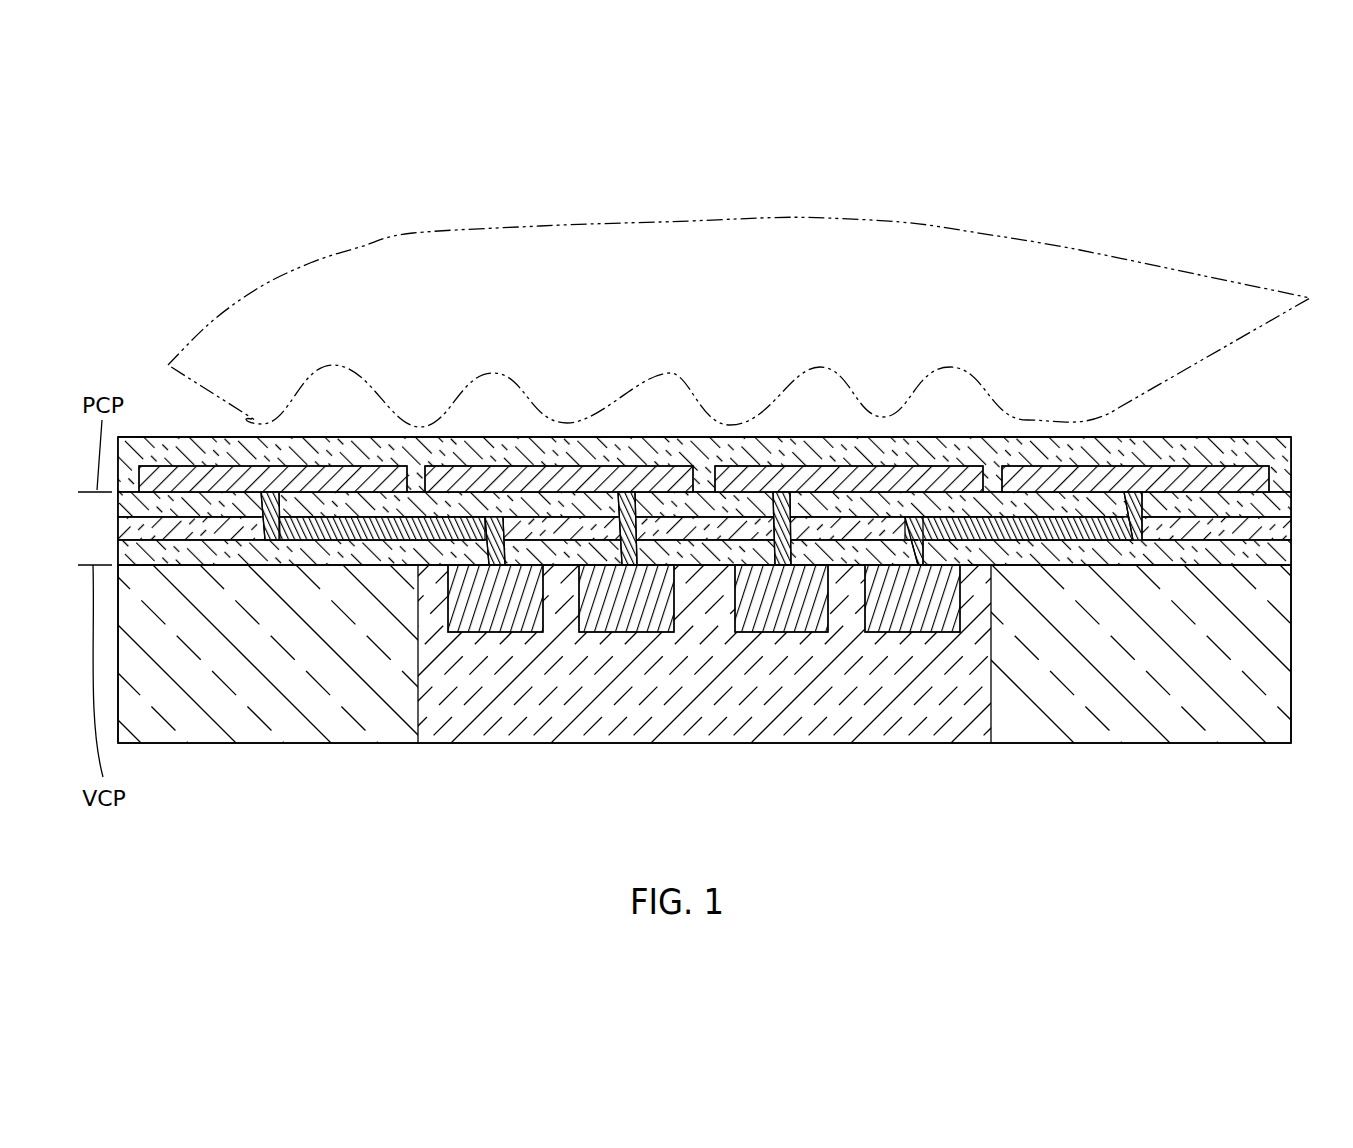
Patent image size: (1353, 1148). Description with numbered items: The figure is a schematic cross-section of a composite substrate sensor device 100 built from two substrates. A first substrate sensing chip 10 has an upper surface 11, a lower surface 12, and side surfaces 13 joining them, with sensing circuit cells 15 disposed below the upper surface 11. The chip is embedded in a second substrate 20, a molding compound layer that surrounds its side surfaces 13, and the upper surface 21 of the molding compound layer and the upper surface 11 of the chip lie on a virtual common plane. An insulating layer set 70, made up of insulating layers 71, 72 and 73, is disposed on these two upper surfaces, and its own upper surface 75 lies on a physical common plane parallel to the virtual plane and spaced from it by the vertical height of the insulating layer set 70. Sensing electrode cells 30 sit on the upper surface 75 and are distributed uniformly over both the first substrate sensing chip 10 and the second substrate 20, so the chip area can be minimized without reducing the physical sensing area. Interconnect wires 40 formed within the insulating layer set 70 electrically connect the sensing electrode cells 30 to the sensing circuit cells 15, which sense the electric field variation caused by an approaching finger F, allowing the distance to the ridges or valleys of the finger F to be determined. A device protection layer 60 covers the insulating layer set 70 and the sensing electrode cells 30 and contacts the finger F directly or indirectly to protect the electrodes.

The composite substrate sensor device 100 is at (829, 210).
The first substrate sensing chip 10 is at (718, 752).
The upper surface 11 is at (847, 567).
The lower surface 12 is at (632, 743).
The side surfaces 13 is at (415, 663).
The sensing circuit cells 15 is at (472, 625).
The second substrate 20 is at (1138, 732).
The upper surface 21 is at (1010, 567).
The sensing electrode cells 30 is at (262, 466).
The interconnect wires 40 is at (369, 517).
The device protection layer 60 is at (572, 445).
The insulating layer set 70 is at (726, 476).
The insulating layer 71 is at (1217, 567).
The insulating layer 72 is at (1283, 528).
The insulating layer 73 is at (1192, 500).
The upper surface 75 is at (1282, 438).
The finger F is at (417, 234).